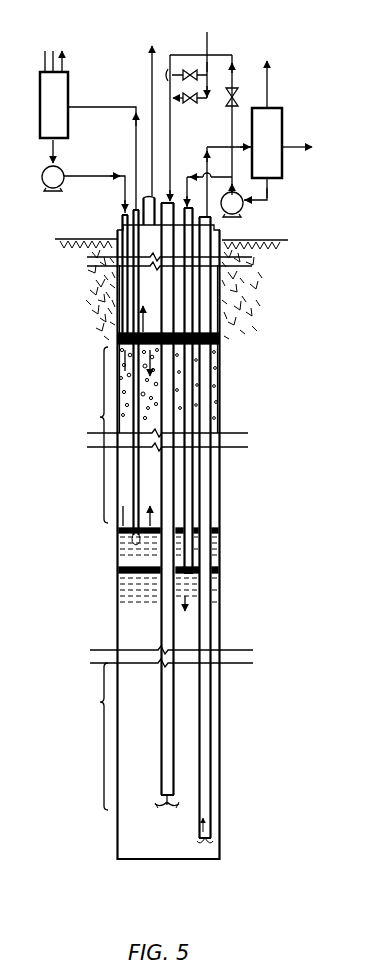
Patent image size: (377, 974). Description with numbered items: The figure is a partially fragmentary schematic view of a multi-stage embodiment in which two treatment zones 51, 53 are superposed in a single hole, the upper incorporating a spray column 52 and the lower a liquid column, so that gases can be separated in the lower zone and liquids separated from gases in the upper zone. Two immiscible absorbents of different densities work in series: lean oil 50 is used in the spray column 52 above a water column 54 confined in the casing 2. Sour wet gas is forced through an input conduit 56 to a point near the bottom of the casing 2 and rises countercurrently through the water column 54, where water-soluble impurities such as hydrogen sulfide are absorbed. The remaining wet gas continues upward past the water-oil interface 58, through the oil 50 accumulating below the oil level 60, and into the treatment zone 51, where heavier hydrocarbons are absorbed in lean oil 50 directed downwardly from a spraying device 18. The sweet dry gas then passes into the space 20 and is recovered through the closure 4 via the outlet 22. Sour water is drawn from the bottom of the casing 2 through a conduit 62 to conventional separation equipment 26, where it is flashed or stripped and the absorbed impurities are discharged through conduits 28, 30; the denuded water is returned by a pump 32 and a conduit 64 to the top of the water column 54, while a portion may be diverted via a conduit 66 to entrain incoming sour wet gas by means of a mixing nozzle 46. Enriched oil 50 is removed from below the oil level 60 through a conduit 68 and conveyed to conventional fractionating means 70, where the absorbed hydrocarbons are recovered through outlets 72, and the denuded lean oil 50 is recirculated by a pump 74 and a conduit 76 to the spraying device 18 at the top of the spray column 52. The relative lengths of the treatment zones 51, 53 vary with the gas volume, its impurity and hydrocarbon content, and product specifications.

The casing 2 is at (218, 613).
The closure 4 is at (117, 231).
The spraying device 18 is at (219, 340).
The space 20 is at (122, 295).
The outlet 22 is at (158, 66).
The separation equipment 26 is at (275, 154).
The conduit 28 is at (268, 92).
The conduit 30 is at (288, 143).
The pump 32 is at (243, 213).
The mixing nozzle 46 is at (171, 66).
The lean oil 50 is at (118, 381).
The treatment zone 51 is at (95, 435).
The spray column 52 is at (154, 427).
The treatment zone 53 is at (94, 736).
The water column 54 is at (147, 639).
The input conduit 56 is at (164, 762).
The water-oil interface 58 is at (218, 570).
The oil level 60 is at (218, 522).
The conduit 62 is at (200, 703).
The conduit 64 is at (222, 146).
The conduit 66 is at (222, 55).
The conduit 68 is at (136, 470).
The fractionating means 70 is at (61, 113).
The outlets 72 is at (65, 65).
The pump 74 is at (64, 166).
The conduit 76 is at (86, 175).